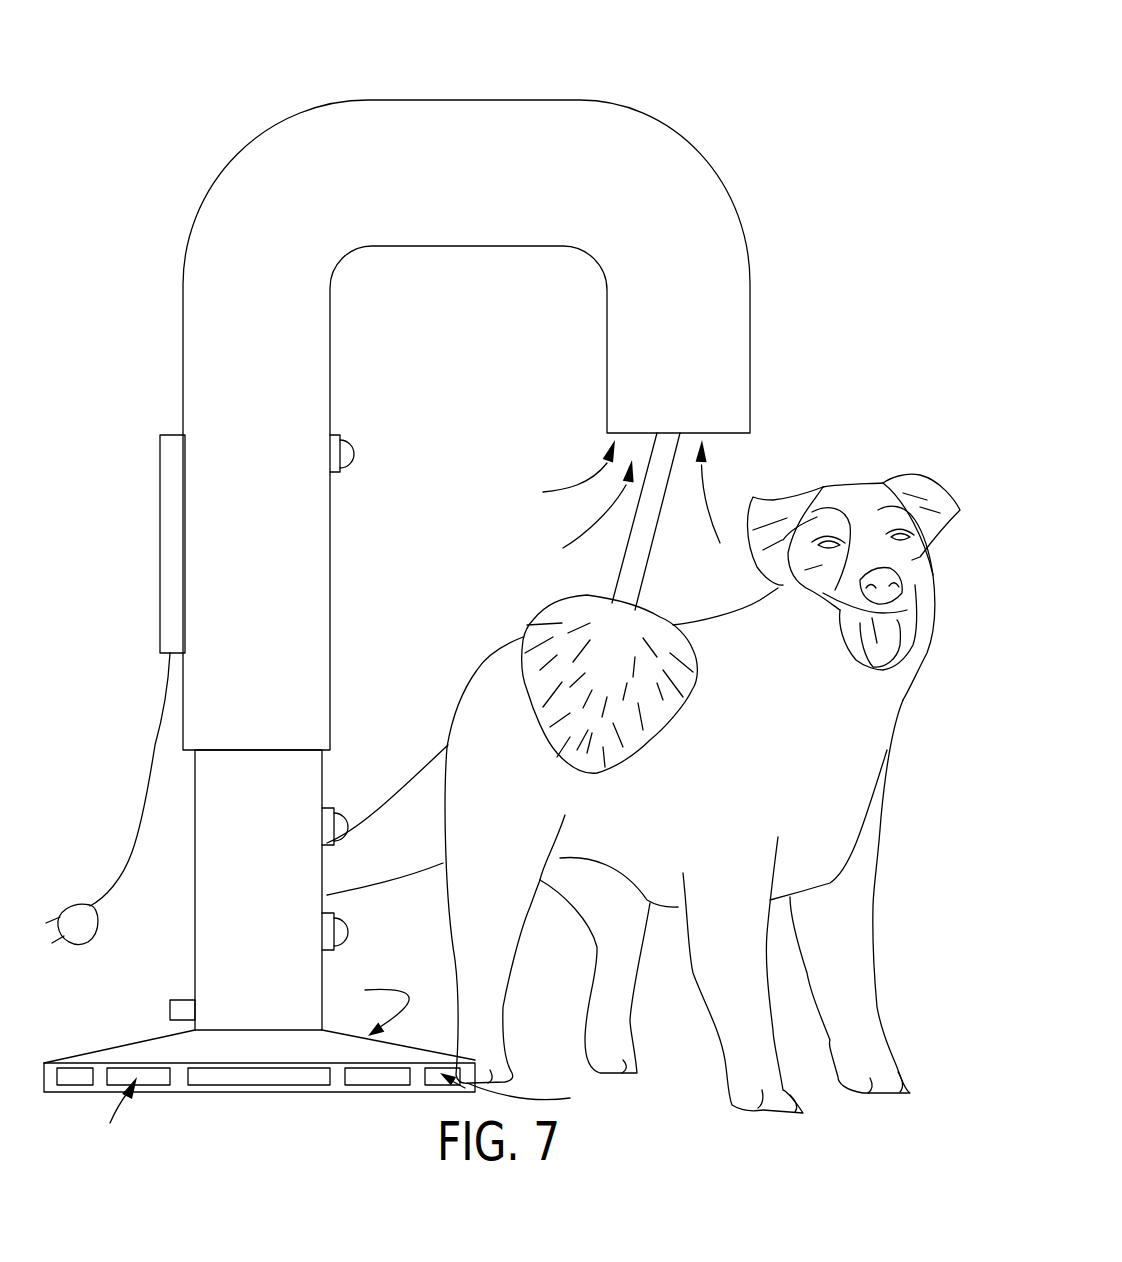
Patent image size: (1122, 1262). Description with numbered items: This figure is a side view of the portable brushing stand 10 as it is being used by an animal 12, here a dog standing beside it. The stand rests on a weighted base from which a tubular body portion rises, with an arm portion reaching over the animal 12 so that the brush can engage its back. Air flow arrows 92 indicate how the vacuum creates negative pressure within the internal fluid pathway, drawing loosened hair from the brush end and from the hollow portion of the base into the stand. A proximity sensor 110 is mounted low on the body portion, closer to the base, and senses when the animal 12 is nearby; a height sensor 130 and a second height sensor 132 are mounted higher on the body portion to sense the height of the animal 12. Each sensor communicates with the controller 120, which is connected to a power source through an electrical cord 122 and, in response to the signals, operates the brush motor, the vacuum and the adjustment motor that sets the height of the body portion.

The portable brushing stand 10 is at (735, 85).
The animal 12 is at (866, 435).
The air flow arrows 92 is at (577, 483).
The proximity sensor 110 is at (340, 942).
The controller 120 is at (170, 480).
The electrical cord 122 is at (150, 742).
The height sensor 130 is at (338, 838).
The height sensor 132 is at (346, 455).